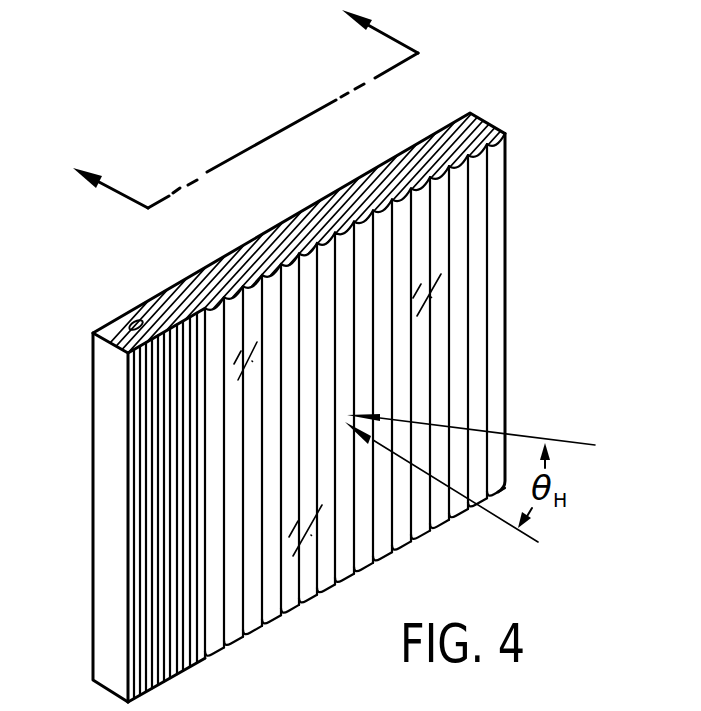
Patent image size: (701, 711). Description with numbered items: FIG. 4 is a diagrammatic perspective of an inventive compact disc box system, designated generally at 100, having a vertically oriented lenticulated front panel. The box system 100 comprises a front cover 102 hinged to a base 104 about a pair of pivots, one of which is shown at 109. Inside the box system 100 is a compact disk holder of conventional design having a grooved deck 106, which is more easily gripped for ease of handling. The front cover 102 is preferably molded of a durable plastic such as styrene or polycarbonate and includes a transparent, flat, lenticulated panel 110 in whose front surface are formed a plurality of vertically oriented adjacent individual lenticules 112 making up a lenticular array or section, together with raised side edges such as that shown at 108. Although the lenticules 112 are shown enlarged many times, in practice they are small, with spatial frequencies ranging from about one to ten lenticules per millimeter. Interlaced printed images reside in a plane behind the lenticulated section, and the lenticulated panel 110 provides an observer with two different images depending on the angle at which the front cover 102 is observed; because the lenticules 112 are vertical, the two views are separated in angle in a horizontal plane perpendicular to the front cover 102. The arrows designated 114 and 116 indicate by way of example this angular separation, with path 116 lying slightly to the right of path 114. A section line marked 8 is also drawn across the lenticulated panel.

The box system 100 is at (520, 50).
The front cover 102 is at (290, 210).
The base 104 is at (85, 485).
The grooved deck 106 is at (163, 653).
The raised side edge 108 is at (401, 172).
The pivot 109 is at (136, 322).
The lenticulated panel 110 is at (490, 340).
The lenticules 112 is at (498, 394).
The path of observation 114 is at (528, 543).
The path of observation 116 is at (580, 443).
The section line 8- 8 is at (236, 104).